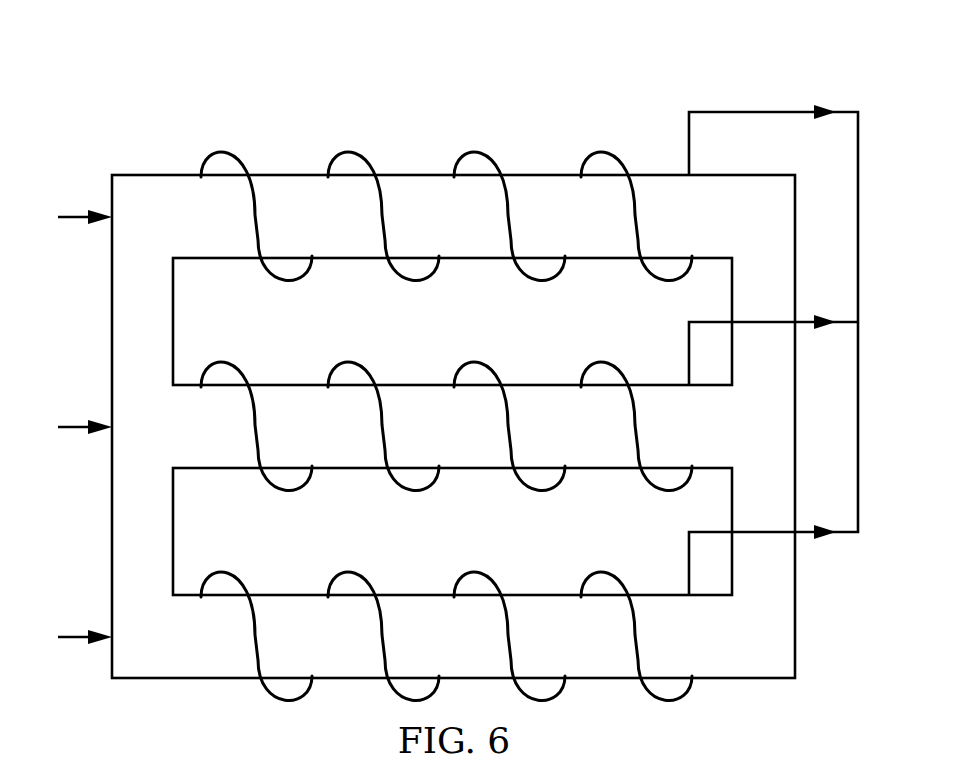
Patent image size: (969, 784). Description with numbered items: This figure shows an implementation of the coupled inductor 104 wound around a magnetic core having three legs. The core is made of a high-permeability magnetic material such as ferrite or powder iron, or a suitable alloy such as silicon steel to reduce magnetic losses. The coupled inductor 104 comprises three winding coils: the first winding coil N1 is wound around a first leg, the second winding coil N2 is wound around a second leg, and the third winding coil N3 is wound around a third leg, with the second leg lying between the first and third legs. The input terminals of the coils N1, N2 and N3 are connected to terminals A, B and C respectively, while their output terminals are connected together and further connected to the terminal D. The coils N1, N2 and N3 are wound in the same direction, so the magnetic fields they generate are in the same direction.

The coupled inductor 104 is at (241, 61).
The first winding coil N1 is at (446, 204).
The second winding coil N2 is at (446, 416).
The third winding coil N3 is at (446, 623).
The terminal A is at (73, 218).
The terminal B is at (73, 428).
The terminal C is at (73, 638).
The terminal D is at (785, 350).